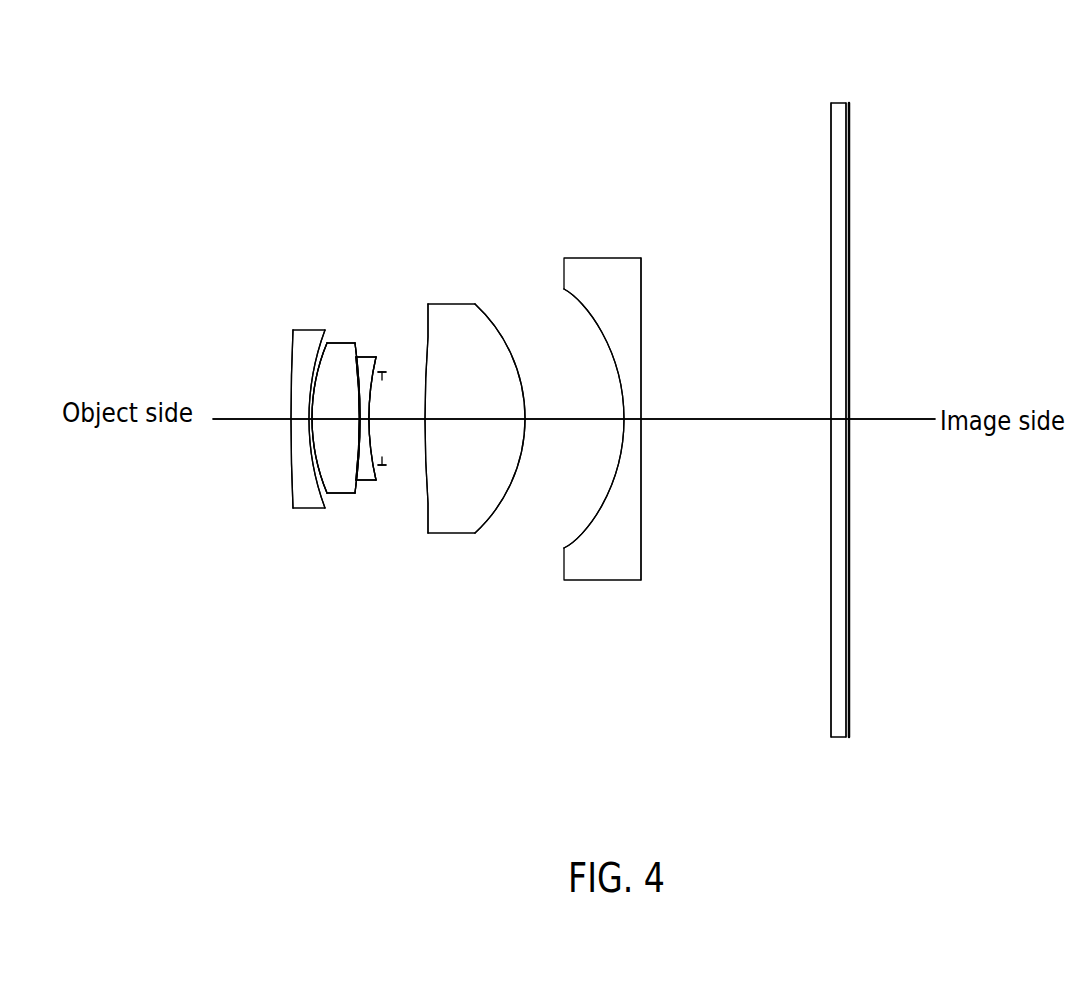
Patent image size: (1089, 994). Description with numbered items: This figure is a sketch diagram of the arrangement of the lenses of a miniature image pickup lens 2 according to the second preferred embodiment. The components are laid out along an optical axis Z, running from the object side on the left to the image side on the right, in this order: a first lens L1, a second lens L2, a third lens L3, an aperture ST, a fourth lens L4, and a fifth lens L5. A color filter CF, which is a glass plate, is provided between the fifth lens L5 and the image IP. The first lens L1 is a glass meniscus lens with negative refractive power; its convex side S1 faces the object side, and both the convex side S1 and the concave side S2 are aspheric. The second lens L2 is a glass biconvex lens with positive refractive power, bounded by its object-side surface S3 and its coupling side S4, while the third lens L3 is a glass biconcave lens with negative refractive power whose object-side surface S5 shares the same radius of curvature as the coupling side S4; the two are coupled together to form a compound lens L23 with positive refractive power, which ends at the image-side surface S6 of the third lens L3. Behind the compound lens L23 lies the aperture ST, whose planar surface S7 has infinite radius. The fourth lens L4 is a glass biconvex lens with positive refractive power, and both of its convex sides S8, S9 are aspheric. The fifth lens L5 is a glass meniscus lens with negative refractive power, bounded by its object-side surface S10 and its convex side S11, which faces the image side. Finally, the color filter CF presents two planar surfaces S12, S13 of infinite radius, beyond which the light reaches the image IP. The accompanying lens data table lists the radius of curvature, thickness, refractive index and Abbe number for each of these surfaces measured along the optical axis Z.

The miniature image pickup lens 2 is at (126, 172).
The optical axis Z is at (245, 419).
The first lens L1 is at (308, 508).
The second lens L2 is at (340, 493).
The third lens L3 is at (362, 481).
The compound lens L23 is at (375, 635).
The fourth lens L4 is at (455, 533).
The fifth lens L5 is at (597, 580).
The aperture ST is at (382, 466).
The convex side of the first lens S1 is at (288, 358).
The concave side of the first lens S2 is at (322, 350).
The object-side surface of the second lens S3 is at (330, 343).
The coupling side of the second lens S4 is at (353, 343).
The object-side surface of the third lens S5 is at (361, 357).
The image-side surface of the third lens S6 is at (375, 357).
The aperture surface S7 is at (383, 370).
The object-side convex side of the fourth lens S8 is at (430, 337).
The image-side convex side of the fourth lens S9 is at (502, 326).
The object-side surface of the fifth lens S10 is at (588, 312).
The convex side of the fifth lens S11 is at (642, 308).
The object-side surface of the color filter S12 is at (831, 128).
The image-side surface of the color filter S13 is at (846, 115).
The color filter CF is at (833, 737).
The image IP is at (849, 717).